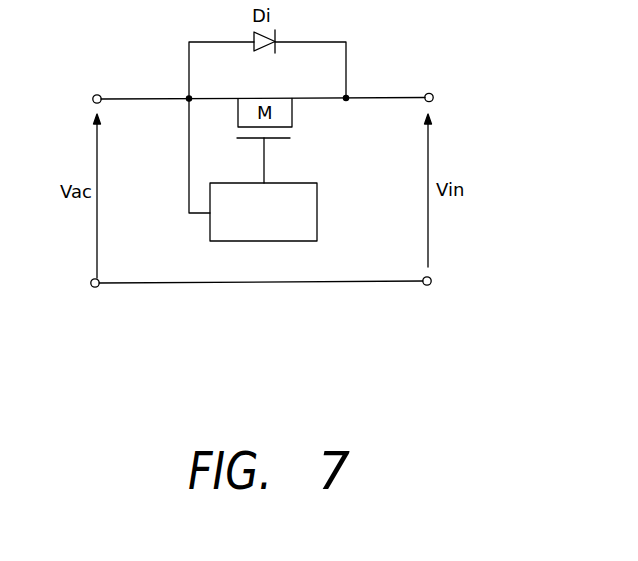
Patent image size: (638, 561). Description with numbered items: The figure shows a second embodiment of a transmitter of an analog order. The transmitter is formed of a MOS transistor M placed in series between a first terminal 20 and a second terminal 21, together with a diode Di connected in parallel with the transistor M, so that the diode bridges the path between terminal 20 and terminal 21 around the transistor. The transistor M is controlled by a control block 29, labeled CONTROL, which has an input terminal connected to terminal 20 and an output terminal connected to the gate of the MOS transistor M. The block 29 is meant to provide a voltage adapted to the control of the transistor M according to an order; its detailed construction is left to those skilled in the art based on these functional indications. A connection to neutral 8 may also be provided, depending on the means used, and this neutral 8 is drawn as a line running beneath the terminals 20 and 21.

The terminal 20 is at (96, 94).
The terminal 21 is at (431, 92).
The block (CONTROL) 29 is at (318, 196).
The neutral 8 is at (269, 283).